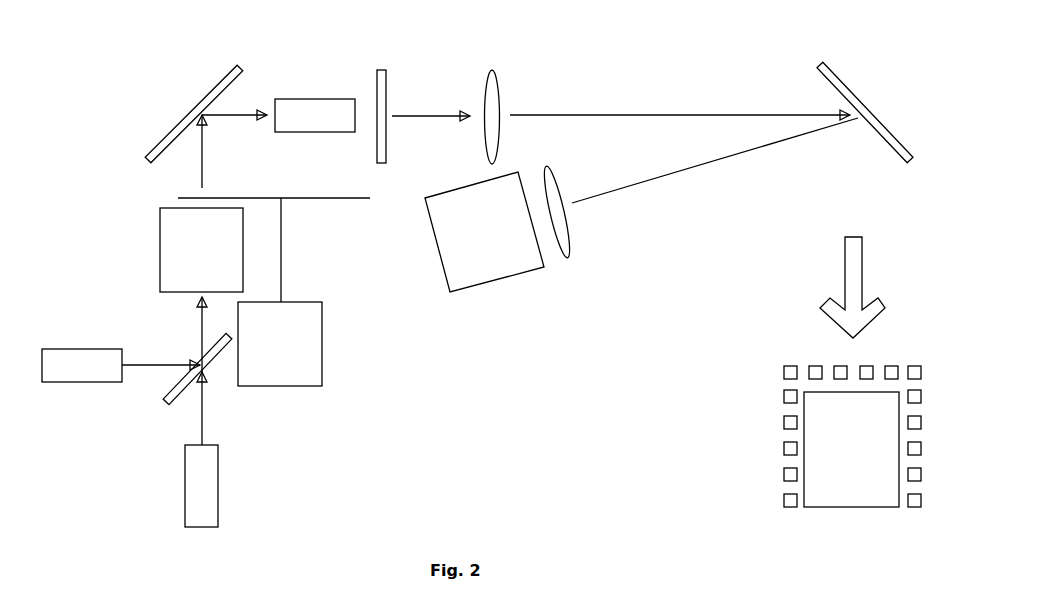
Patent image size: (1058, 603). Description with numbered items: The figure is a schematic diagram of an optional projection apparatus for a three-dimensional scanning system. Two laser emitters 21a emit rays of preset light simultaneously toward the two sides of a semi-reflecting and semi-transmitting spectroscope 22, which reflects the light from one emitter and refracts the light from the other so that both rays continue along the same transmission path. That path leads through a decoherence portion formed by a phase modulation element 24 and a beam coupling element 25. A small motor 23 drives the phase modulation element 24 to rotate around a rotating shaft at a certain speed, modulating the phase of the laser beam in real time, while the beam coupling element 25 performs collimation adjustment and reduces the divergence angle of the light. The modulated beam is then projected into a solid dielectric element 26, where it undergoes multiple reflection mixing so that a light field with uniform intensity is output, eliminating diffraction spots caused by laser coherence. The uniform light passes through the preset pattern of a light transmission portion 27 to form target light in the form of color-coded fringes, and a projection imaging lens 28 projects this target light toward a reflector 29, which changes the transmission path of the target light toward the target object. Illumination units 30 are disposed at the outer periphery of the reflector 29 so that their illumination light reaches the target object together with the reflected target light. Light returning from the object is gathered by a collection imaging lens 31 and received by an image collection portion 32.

The laser emitter 21a is at (120, 413).
The semi-reflecting and semi-transmitting spectroscope 22 is at (139, 387).
The small motor 23 is at (335, 407).
The phase modulation element 24 is at (317, 284).
The beam coupling element 25 is at (142, 245).
The solid dielectric element 26 is at (261, 81).
The light transmission portion 27 is at (326, 96).
The projection imaging lens 28 is at (438, 97).
The reflector 29 is at (477, 96).
The illumination unit 30 is at (792, 389).
The collection imaging lens 31 is at (611, 268).
The image collection portion 32 is at (511, 271).